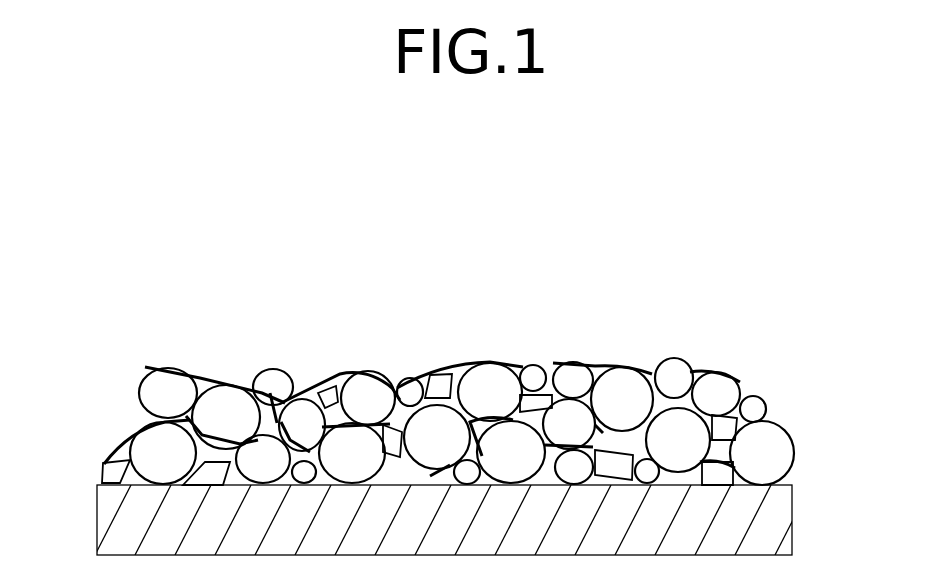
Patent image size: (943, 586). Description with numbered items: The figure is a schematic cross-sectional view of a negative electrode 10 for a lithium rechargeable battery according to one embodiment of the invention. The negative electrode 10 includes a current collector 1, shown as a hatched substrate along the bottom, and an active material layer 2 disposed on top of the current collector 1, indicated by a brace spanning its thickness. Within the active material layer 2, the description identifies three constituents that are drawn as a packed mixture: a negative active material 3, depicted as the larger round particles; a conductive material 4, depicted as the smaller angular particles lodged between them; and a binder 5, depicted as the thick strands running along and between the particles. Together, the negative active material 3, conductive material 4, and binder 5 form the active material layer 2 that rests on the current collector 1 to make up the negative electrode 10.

The current collector 1 is at (138, 516).
The active material layer 2 is at (78, 386).
The negative active material 3 is at (277, 382).
The conductive material 4 is at (440, 387).
The binder 5 is at (205, 370).
The electrode 10 is at (478, 278).